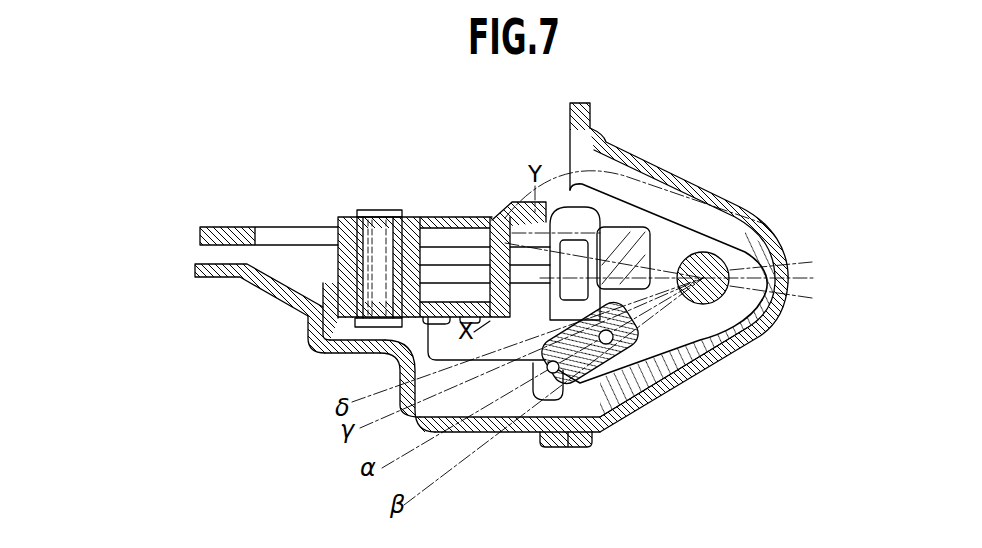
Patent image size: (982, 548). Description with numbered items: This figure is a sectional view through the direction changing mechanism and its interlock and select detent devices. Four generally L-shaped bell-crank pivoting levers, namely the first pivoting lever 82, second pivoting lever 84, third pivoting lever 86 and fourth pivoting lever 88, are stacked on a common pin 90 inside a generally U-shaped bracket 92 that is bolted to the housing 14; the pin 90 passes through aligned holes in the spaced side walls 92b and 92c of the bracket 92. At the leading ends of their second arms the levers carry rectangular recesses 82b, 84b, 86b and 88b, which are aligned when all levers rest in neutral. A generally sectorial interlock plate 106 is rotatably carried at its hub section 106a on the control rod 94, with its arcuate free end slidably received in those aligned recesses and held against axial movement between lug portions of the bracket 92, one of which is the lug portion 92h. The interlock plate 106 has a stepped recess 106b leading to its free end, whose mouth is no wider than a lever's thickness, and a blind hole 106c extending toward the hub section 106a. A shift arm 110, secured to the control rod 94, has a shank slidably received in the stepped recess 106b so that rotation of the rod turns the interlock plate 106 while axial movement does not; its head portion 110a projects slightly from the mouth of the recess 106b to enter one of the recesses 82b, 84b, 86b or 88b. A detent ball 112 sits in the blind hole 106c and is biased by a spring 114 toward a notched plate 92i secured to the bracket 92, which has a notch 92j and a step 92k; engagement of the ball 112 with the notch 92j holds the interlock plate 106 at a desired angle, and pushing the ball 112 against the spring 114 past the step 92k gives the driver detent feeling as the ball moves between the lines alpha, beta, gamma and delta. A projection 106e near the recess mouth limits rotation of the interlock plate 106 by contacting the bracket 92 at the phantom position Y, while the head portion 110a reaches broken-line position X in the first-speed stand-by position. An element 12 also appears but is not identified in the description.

The frame strip 12 is at (252, 281).
The housing 14 is at (592, 126).
The first pivoting lever 82 is at (340, 297).
The rectangular recess of first pivoting lever 82b is at (485, 294).
The second pivoting lever 84 is at (347, 277).
The rectangular recess of second pivoting lever 84b is at (485, 275).
The third pivoting lever 86 is at (338, 262).
The rectangular recess of third pivoting lever 86b is at (485, 256).
The fourth pivoting lever 88 is at (300, 226).
The rectangular recess of fourth pivoting lever 88b is at (487, 227).
The common pin 90 is at (373, 210).
The bracket 92 is at (417, 213).
The side wall of bracket 92b is at (333, 354).
The side wall of bracket 92c is at (347, 216).
The lug portion of bracket 92h is at (633, 324).
The notched plate 92i is at (435, 341).
The notch of notched plate 92j is at (538, 434).
The step of notched plate 92k is at (503, 434).
The control rod 94 is at (718, 266).
The interlock plate 106 is at (690, 225).
The hub section of interlock plate 106a is at (742, 342).
The stepped recess of interlock plate 106b is at (592, 240).
The blind hole 106c is at (642, 397).
The projection of interlock plate 106e is at (518, 203).
The shift arm 110 is at (631, 250).
The head portion of shift arm 110a is at (513, 340).
The detent ball 112 is at (583, 384).
The spring 114 is at (620, 378).